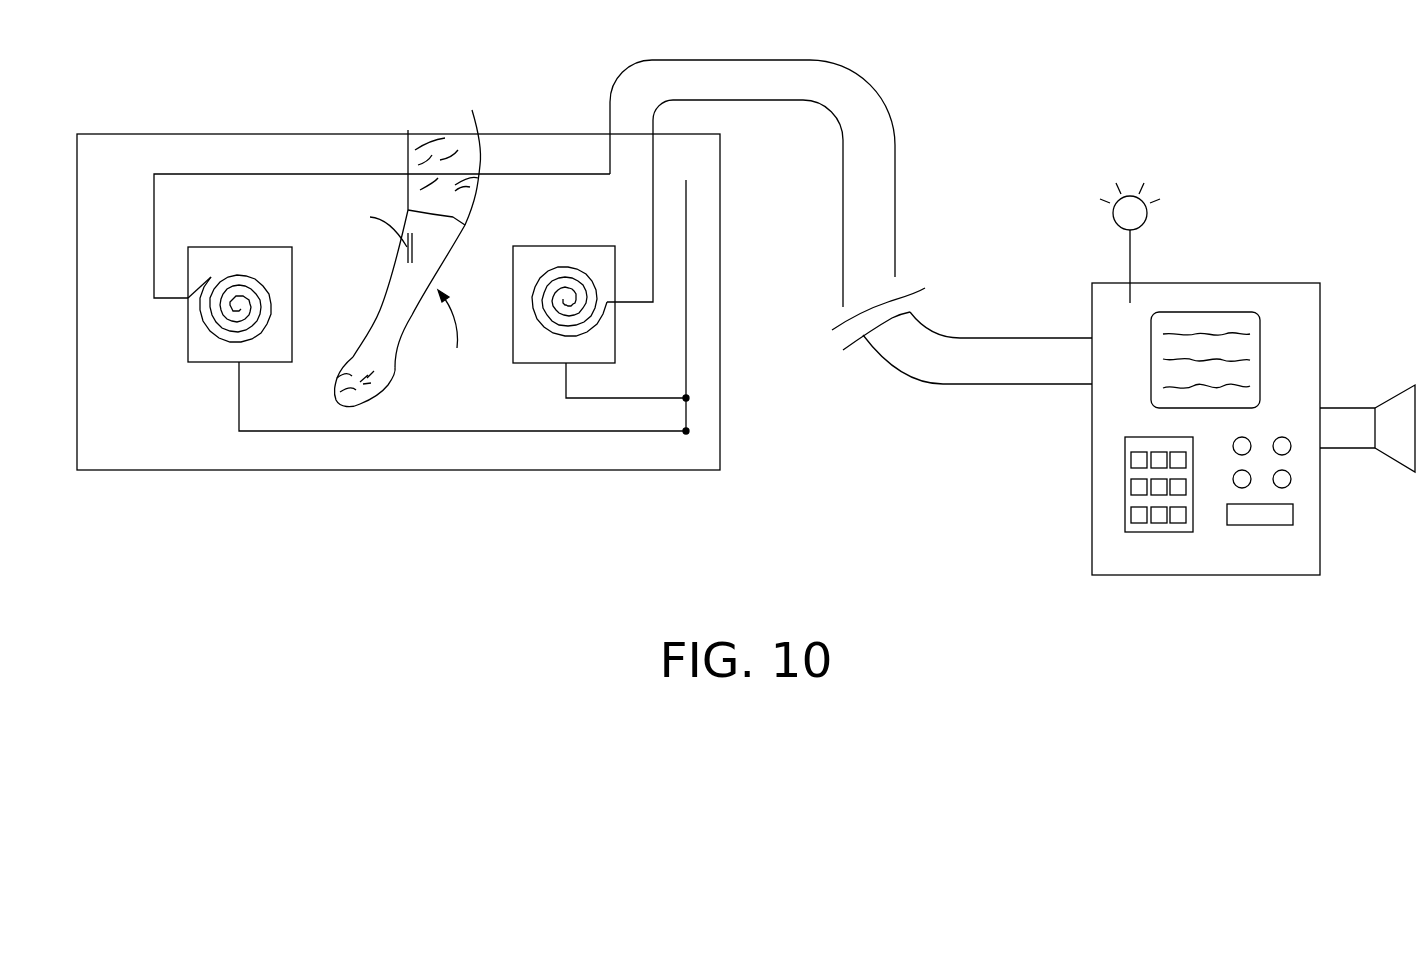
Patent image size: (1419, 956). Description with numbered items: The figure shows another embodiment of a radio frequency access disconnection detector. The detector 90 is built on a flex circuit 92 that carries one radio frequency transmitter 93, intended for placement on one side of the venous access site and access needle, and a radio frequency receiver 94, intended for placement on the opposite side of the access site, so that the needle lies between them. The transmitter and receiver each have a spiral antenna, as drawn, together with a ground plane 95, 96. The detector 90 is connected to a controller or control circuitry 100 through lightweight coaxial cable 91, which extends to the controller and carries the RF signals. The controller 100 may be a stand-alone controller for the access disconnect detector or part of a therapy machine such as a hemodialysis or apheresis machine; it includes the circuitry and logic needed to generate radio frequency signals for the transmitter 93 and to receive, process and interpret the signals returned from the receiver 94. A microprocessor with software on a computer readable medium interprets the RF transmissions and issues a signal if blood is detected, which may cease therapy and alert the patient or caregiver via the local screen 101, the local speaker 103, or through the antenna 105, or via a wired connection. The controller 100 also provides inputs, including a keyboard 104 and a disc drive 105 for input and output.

The detector 90 is at (430, 359).
The coaxial cable 91 is at (849, 376).
The flex circuit 92 is at (710, 323).
The radio frequency transmitter 93 is at (195, 303).
The radio frequency receiver 94 is at (554, 302).
The ground plane 95 is at (228, 247).
The ground plane 96 is at (543, 246).
The controller 100 is at (1167, 405).
The local screen 101 is at (1220, 314).
The local speaker 103 is at (1387, 399).
The keyboard 104 is at (1125, 517).
The antenna / disc drive 105 is at (1125, 257).